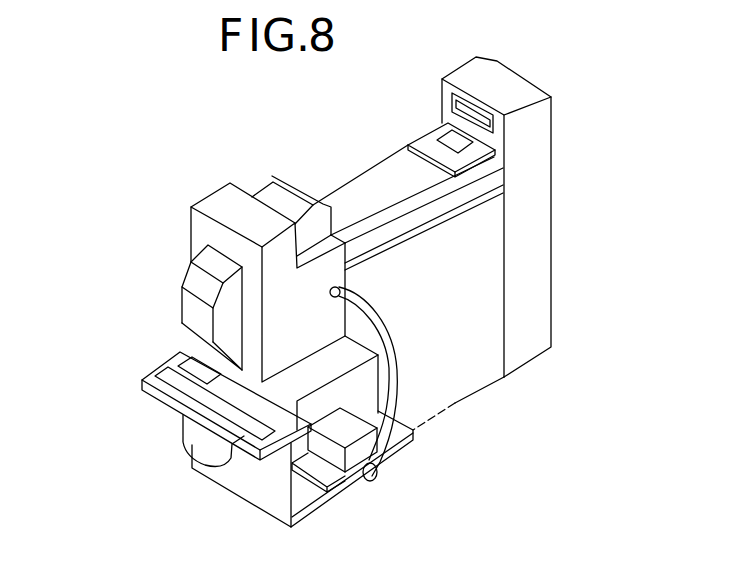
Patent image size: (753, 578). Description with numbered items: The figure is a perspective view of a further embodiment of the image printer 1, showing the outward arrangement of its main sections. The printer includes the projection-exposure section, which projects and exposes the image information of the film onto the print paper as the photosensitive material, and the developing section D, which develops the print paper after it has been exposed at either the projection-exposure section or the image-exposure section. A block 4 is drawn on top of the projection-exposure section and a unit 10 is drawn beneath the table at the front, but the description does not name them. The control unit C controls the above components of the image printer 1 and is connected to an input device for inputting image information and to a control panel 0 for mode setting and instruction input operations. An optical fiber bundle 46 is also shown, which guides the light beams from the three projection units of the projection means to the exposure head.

The image printer 1 is at (604, 297).
The developing section D is at (358, 177).
The raised block on top of tower 4 is at (261, 192).
The control panel 0 is at (128, 325).
The drawer unit 10 is at (192, 428).
The control unit C is at (237, 482).
The optical fiber bundle 46 is at (395, 330).